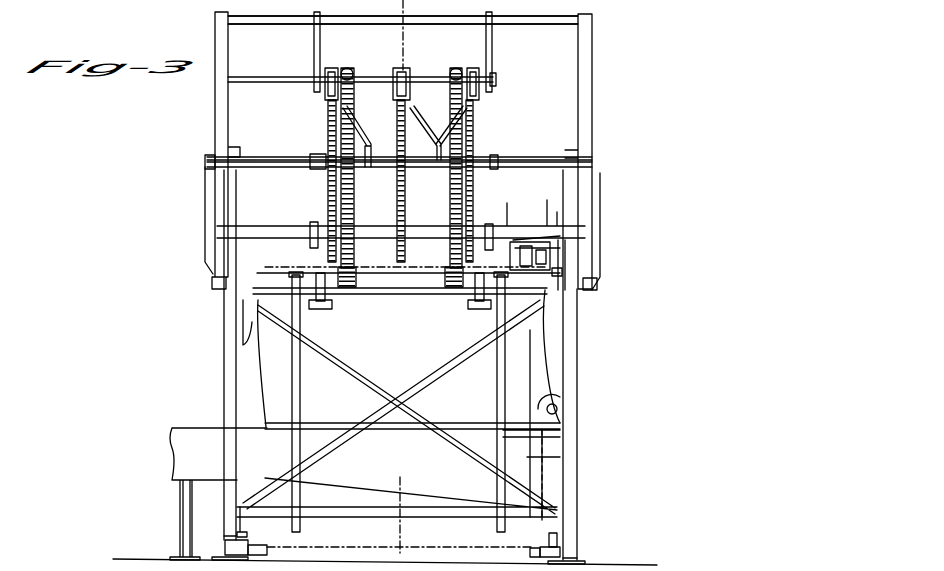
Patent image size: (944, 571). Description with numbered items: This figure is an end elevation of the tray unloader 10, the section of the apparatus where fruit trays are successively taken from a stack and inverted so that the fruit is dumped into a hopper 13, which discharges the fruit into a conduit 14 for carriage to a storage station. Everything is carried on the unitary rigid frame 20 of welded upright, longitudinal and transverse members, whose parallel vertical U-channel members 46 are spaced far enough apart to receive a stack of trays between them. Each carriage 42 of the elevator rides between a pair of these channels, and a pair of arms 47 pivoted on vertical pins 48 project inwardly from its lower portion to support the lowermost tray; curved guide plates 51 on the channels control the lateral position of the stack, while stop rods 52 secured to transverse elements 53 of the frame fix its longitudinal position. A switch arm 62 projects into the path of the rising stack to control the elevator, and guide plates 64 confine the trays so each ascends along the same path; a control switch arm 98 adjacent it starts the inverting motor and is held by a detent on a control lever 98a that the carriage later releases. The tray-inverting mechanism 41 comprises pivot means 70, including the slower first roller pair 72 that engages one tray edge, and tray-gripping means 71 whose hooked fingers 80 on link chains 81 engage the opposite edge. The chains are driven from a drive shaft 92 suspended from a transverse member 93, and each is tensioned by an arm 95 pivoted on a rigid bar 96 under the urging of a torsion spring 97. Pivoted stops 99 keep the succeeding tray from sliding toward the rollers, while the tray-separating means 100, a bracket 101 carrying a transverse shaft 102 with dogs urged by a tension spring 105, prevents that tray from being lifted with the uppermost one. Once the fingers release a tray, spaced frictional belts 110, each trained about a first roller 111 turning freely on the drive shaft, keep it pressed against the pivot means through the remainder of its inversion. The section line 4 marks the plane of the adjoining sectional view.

The section line 4- 4 is at (350, 7).
The tray unloader 10 is at (603, 62).
The hopper 13 is at (262, 367).
The conduit 14 is at (196, 445).
The frame 20 is at (575, 353).
The tray-inverting mechanism 41 is at (400, 161).
The carriage 42 is at (224, 536).
The U-channel member 46 is at (226, 315).
The arm 47 is at (268, 549).
The vertical pin 48 is at (239, 514).
The curved guide plate 51 is at (236, 549).
The stop rod 52 is at (300, 322).
The transverse element 53 is at (426, 302).
The switch arm 62 is at (596, 292).
The guide plate 64 is at (247, 330).
The pivot means 70 is at (358, 280).
The tray-gripping means 71 is at (331, 68).
The first roller pair 72 is at (338, 272).
The finger 80 is at (348, 97).
The link chain 81 is at (475, 139).
The drive shaft 92 is at (288, 80).
The transverse member 93 is at (292, 24).
The arm 95 is at (330, 123).
The rigid bar 96 is at (282, 158).
The torsion spring 97 is at (318, 170).
The control switch arm 98 is at (552, 276).
The control lever 98a is at (558, 247).
The stop 99 is at (302, 285).
The tray-separating means 100 is at (520, 230).
The bracket 101 is at (508, 216).
The transverse shaft 102 is at (406, 268).
The tension spring 105 is at (562, 238).
The belt 110 is at (345, 211).
The first roller 111 is at (357, 69).